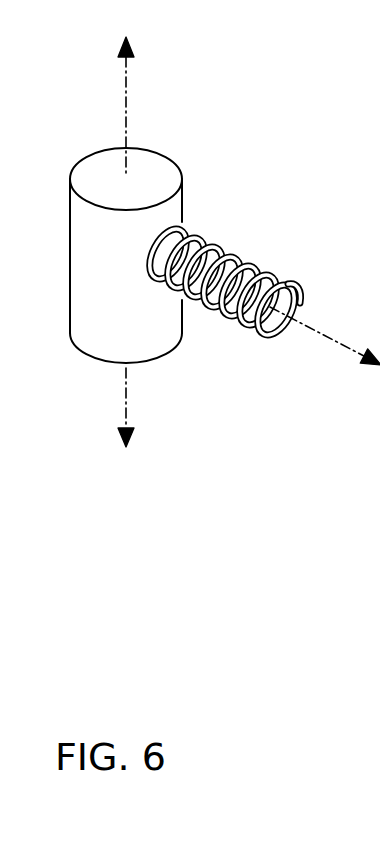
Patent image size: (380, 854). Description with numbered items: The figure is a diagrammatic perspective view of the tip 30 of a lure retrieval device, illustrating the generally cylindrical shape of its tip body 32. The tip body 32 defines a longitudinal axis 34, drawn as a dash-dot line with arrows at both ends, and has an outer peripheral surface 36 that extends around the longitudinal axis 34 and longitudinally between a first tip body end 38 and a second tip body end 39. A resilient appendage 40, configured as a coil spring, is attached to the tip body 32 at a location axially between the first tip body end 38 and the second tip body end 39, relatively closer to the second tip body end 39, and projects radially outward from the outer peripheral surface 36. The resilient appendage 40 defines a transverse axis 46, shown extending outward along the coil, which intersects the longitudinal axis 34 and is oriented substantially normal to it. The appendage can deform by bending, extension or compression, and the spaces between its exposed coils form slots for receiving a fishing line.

The tip 30 is at (203, 242).
The tip body 32 is at (83, 355).
The longitudinal axis 34 is at (126, 80).
The outer peripheral surface 36 is at (83, 303).
The first tip body end 38 is at (155, 355).
The second tip body end 39 is at (156, 150).
The resilient appendage 40 is at (266, 268).
The transverse axis 46 is at (328, 338).